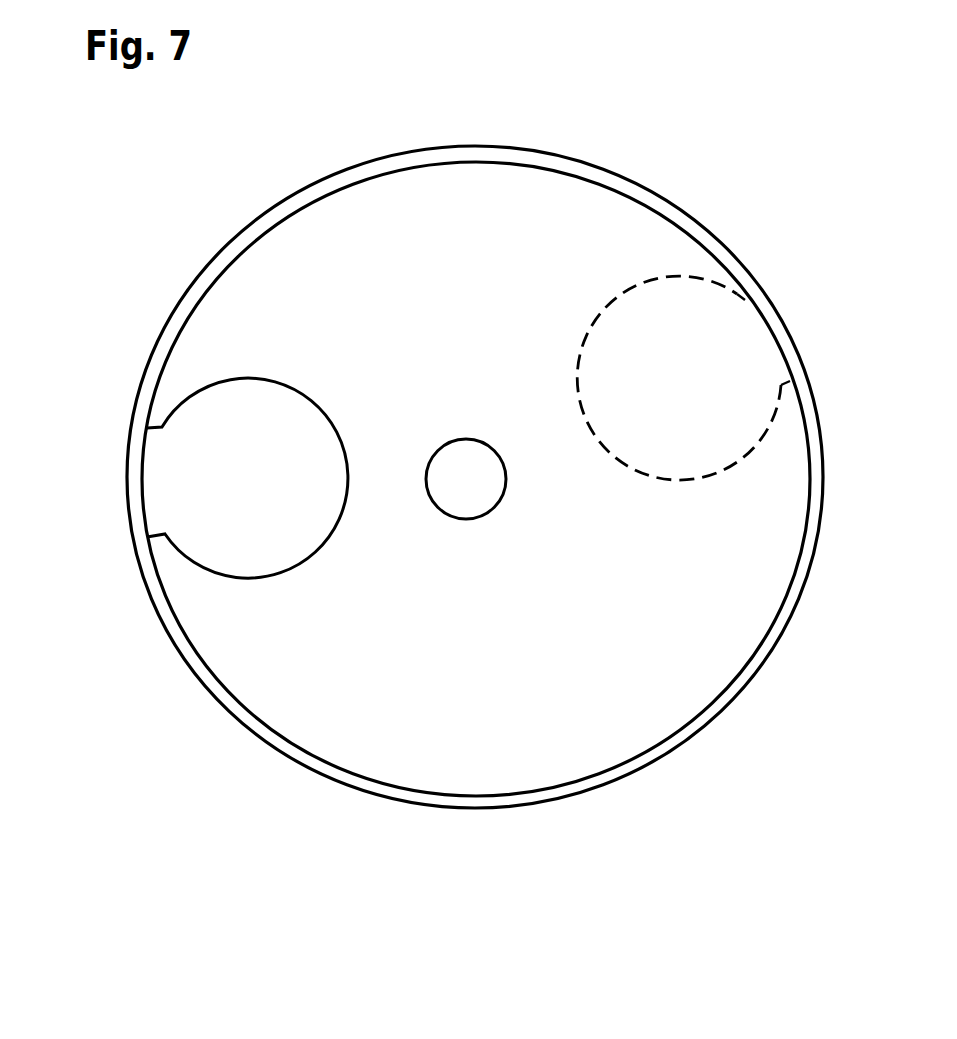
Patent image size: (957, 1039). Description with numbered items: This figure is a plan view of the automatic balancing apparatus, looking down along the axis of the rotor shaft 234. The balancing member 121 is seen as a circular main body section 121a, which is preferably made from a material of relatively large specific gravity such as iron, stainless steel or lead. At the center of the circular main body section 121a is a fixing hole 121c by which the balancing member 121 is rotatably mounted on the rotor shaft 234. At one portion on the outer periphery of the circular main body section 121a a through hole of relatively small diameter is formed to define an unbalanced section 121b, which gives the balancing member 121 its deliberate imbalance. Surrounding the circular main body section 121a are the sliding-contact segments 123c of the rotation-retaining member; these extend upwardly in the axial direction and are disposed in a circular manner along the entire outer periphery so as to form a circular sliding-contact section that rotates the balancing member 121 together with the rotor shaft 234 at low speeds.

The balancing member 121 is at (438, 520).
The circular main body section 121a is at (677, 683).
The unbalanced section 121b is at (232, 498).
The fixing hole 121c is at (475, 511).
The sliding-contact segment 123c is at (548, 797).
The rotor shaft 234 is at (486, 489).